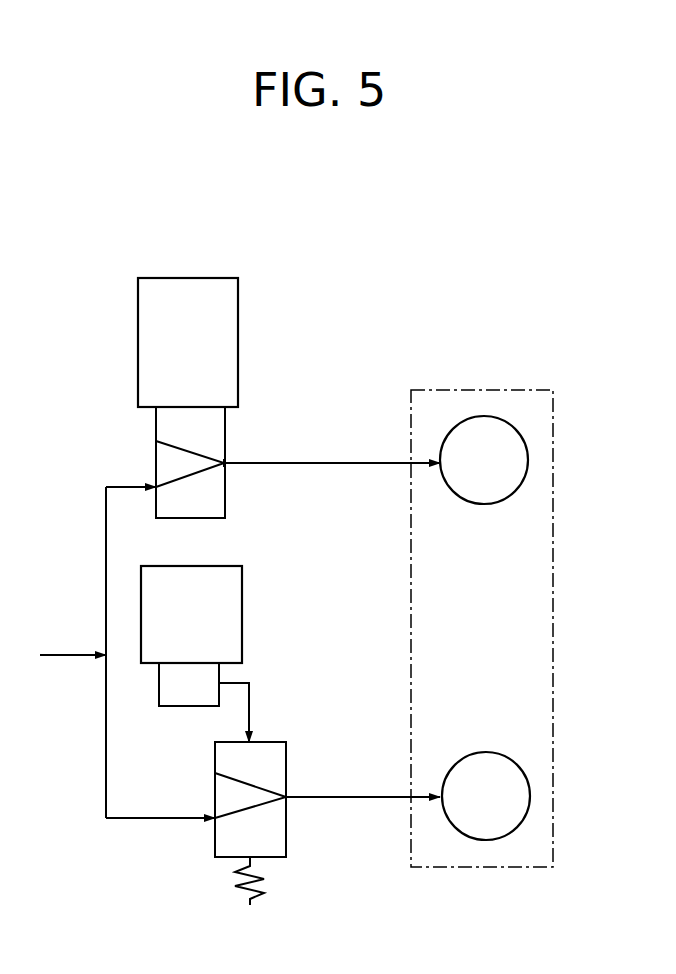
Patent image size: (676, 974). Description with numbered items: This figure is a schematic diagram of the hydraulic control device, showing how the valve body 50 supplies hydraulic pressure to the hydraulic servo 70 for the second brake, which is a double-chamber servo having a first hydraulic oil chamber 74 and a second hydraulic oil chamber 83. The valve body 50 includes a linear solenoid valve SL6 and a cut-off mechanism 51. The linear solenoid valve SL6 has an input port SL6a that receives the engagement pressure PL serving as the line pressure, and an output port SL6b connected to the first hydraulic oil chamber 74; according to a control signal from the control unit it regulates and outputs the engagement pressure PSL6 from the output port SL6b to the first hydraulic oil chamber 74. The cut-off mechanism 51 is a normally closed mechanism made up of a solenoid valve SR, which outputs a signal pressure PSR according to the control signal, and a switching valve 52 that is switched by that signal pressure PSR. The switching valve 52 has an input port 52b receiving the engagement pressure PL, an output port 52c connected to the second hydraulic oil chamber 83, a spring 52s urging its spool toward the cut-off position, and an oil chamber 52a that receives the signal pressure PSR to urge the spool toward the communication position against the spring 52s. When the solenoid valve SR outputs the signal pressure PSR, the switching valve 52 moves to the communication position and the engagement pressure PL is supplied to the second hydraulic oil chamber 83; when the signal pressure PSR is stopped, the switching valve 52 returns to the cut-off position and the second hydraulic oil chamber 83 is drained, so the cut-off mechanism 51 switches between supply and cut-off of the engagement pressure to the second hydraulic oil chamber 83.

The valve body 50 is at (386, 336).
The cut-off mechanism 51 is at (336, 606).
The switching valve 52 is at (313, 718).
The oil chamber 52a is at (253, 740).
The input port 52b is at (211, 821).
The output port 52c is at (288, 800).
The spring 52s is at (265, 882).
The hydraulic servo 70 is at (495, 390).
The first hydraulic oil chamber 74 is at (486, 505).
The second hydraulic oil chamber 83 is at (483, 752).
The linear solenoid valve SL6 is at (258, 352).
The input port SL6a is at (155, 482).
The output port SL6b is at (226, 466).
The solenoid valve SR is at (265, 618).
The engagement pressure PSL6 is at (332, 450).
The signal pressure PSR is at (257, 711).
The engagement pressure PL is at (73, 641).